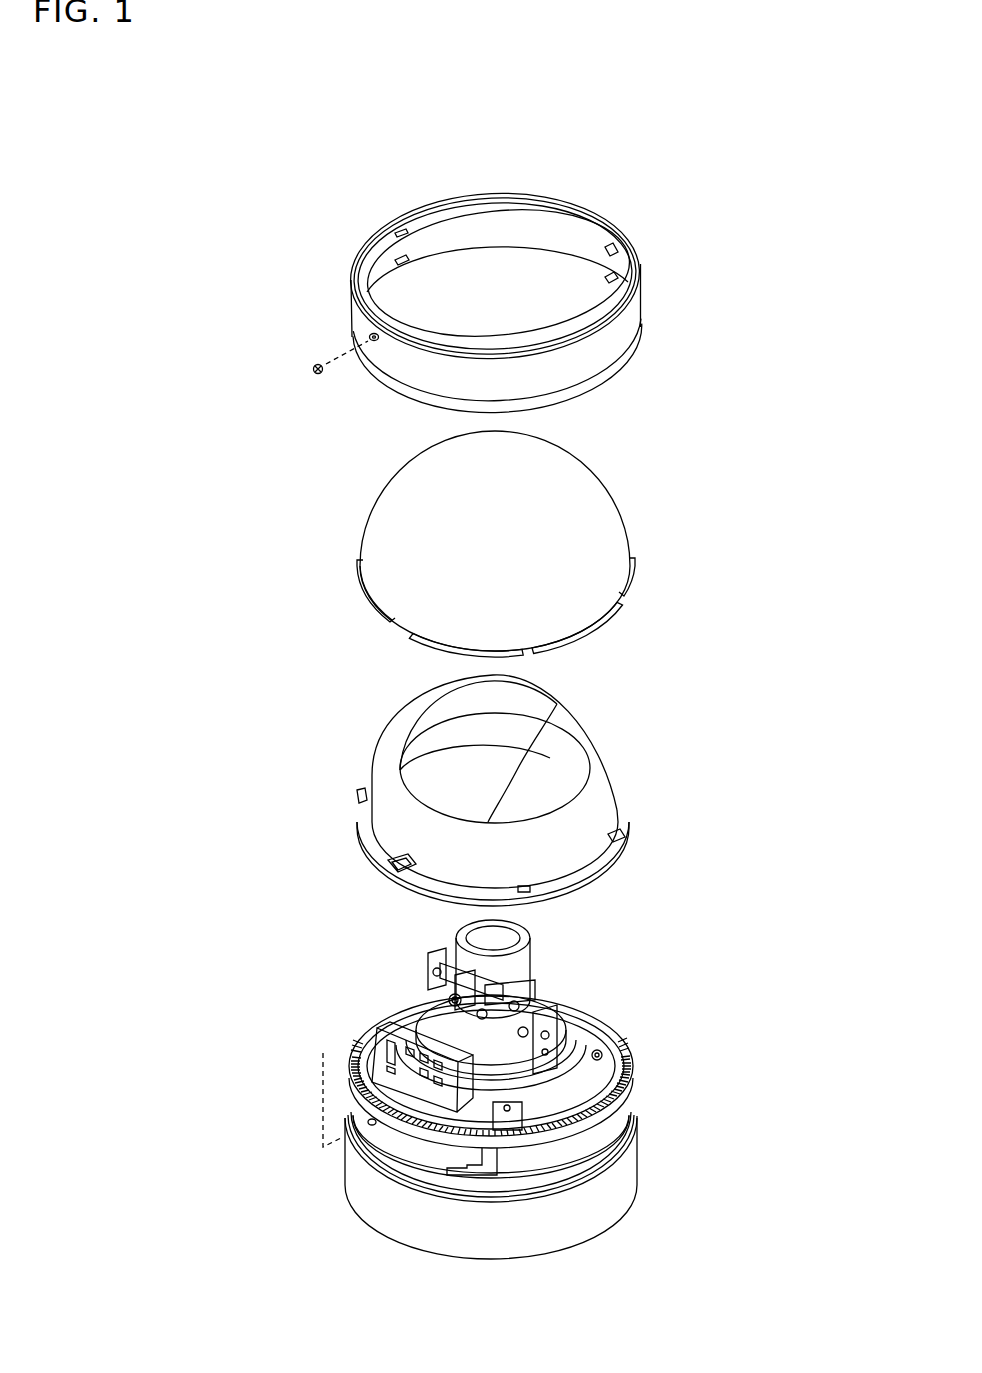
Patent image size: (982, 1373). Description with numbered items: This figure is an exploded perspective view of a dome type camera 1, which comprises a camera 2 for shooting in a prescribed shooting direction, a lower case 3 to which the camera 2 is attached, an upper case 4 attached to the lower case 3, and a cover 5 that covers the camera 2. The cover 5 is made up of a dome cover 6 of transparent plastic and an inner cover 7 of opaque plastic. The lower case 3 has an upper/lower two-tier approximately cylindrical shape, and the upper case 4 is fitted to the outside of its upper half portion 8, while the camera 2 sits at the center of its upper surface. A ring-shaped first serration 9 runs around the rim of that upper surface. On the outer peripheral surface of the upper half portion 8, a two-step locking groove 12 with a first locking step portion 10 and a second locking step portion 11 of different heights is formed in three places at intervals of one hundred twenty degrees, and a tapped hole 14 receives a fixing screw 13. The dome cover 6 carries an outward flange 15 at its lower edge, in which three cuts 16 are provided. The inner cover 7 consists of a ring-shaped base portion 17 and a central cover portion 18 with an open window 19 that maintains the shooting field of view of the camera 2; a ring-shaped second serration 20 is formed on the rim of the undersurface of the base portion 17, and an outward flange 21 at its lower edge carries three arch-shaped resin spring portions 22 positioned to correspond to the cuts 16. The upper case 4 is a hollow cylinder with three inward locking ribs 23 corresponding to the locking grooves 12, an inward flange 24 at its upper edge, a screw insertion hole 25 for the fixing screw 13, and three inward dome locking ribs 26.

The dome type camera 1 is at (742, 200).
The camera 2 is at (536, 962).
The lower case 3 is at (481, 1117).
The upper case 4 is at (638, 369).
The cover 5 is at (739, 596).
The dome cover 6 is at (637, 547).
The inner cover 7 is at (503, 792).
The upper half portion 8 is at (600, 1137).
The first serration 9 is at (631, 1067).
The first locking step portion 10 is at (473, 1176).
The second locking step portion 11 is at (457, 1176).
The two-step locking groove 12 is at (499, 1166).
The fixing screw 13 is at (315, 374).
The tapped hole 14 is at (366, 1120).
The flange 15 is at (358, 574).
The cuts 16 is at (400, 636).
The base portion 17 is at (613, 808).
The cover portion 18 is at (563, 770).
The window 19 is at (477, 703).
The second serration 20 is at (543, 890).
The flange 21 is at (357, 818).
The resin spring portions 22 is at (417, 863).
The locking ribs 23 is at (406, 259).
The flange 24 is at (604, 231).
The screw insertion hole 25 is at (368, 335).
The dome locking ribs 26 is at (407, 231).